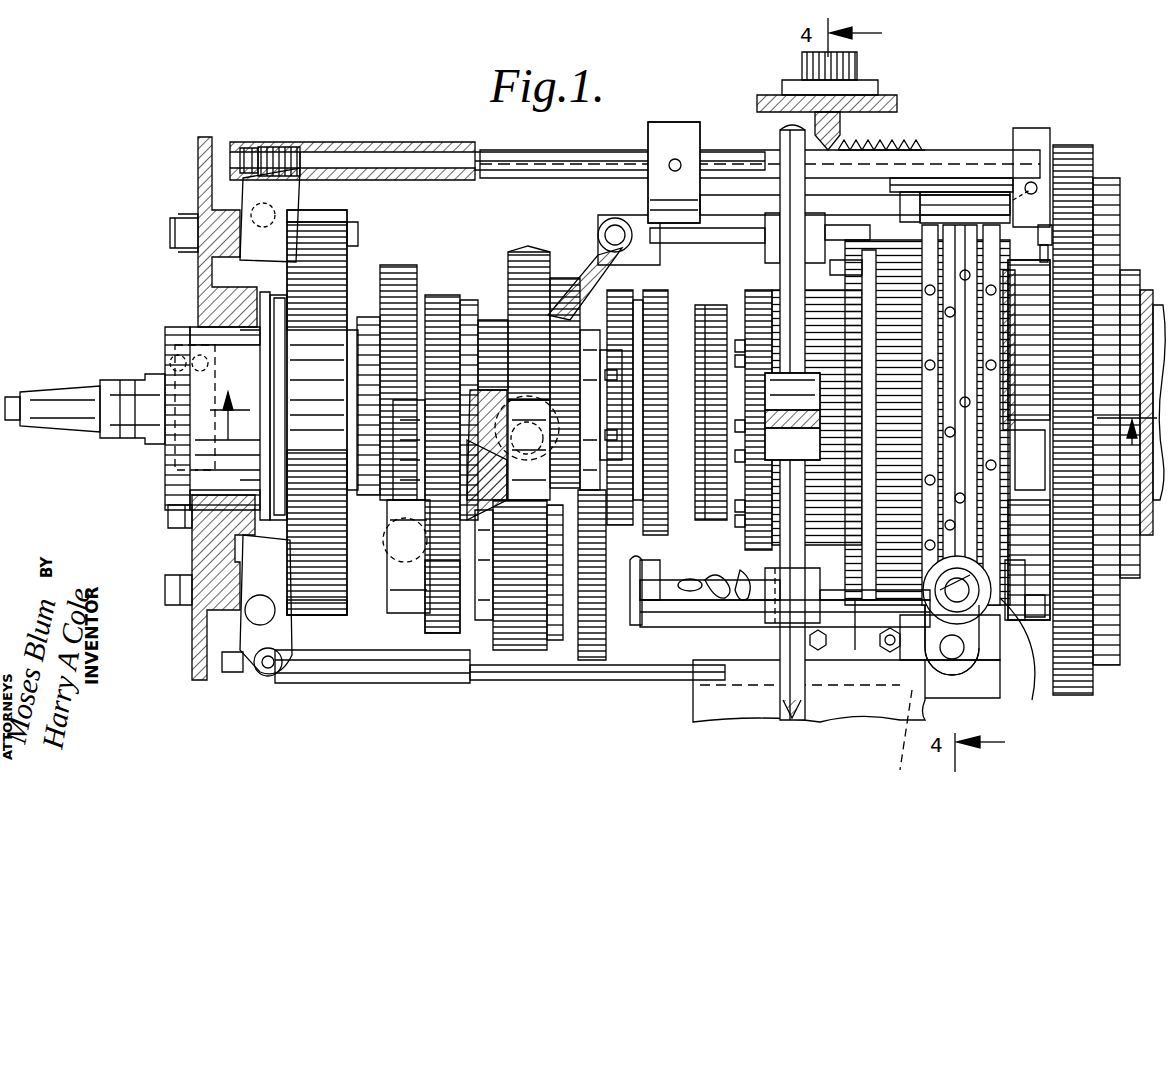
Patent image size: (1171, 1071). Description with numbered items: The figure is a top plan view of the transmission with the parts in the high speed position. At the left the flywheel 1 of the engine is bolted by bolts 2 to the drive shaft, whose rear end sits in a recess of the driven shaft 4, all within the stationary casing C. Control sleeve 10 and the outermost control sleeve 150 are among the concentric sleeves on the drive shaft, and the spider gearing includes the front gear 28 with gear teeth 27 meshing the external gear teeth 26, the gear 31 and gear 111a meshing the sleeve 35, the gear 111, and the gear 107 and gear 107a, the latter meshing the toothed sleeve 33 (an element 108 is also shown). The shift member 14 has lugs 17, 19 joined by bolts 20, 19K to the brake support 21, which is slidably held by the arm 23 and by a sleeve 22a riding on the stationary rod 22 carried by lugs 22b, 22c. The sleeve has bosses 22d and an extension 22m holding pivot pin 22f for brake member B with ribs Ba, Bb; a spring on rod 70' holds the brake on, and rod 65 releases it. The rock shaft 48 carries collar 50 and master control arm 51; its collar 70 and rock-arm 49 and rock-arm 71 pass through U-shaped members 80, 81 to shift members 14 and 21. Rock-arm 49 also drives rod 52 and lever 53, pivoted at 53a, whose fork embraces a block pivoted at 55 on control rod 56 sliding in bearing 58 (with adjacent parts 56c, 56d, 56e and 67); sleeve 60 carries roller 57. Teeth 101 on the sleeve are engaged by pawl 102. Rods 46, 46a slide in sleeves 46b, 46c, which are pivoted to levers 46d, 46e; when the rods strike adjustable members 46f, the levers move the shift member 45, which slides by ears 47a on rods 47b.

The flywheel 1 is at (1093, 160).
The bolts 2 is at (683, 418).
The driven shaft 4 is at (150, 395).
The control sleeve 10 is at (752, 318).
The shift member 14 is at (1029, 440).
The lug 17 is at (1060, 680).
The lug 19 is at (1052, 310).
The bolt 19K is at (1048, 250).
The bolt 20 is at (1010, 620).
The brake support 21 is at (930, 605).
The stationary rod 22 is at (648, 183).
The sleeve 22a is at (940, 175).
The lug 22b is at (1030, 140).
The lug 22c is at (650, 142).
The bosses 22d is at (1005, 205).
The pivot pin 22f is at (1027, 181).
The extension 22m is at (915, 190).
The arm 23 is at (905, 737).
The external gear teeth 26 is at (610, 505).
The gear teeth 27 is at (560, 262).
The front gear 28 is at (580, 384).
The gear 31 is at (440, 335).
The sleeve 33 is at (470, 372).
The sleeve 35 is at (467, 330).
The shift member 45 is at (314, 412).
The longitudinal rod 46 is at (512, 152).
The longitudinal rod 46a is at (505, 680).
The sleeve 46b is at (382, 142).
The sleeve 46c is at (338, 683).
The short lever 46d is at (262, 180).
The short lever 46e is at (258, 672).
The adjustable member 46f is at (300, 150).
The ears 47a is at (322, 214).
The rods 47b is at (358, 232).
The rock shaft 48 is at (792, 422).
The rock-arm 49 is at (775, 215).
The collar 50 is at (800, 390).
The arm 51 is at (820, 425).
The rod 52 is at (745, 243).
The lever 53 is at (548, 505).
The pivot 53a is at (505, 470).
The pivot 55 is at (388, 548).
The control rod 56 is at (636, 620).
The pin 56c is at (648, 625).
The cam 56d is at (690, 580).
The pawl 56e is at (720, 582).
The roller 57 is at (745, 575).
The bearing 58 is at (688, 627).
The sleeve 60 is at (745, 600).
The rod 65 is at (955, 660).
The lobe 67 is at (942, 662).
The collar 70 is at (781, 612).
The rod 70' is at (1005, 649).
The rock-arm 71 is at (855, 650).
The U-shaped member 80 is at (852, 275).
The U-shaped member 81 is at (890, 660).
The teeth 101 is at (905, 142).
The pawl 102 is at (840, 130).
The gear 107 is at (580, 285).
The gear 107a is at (398, 268).
The hub 108 is at (690, 376).
The gear 111 is at (593, 660).
The gear 111a is at (440, 633).
The outermost control sleeve 150 is at (658, 304).
The brake member B is at (945, 416).
The rib Ba is at (925, 340).
The rib Bb is at (998, 402).
The casing C is at (197, 167).